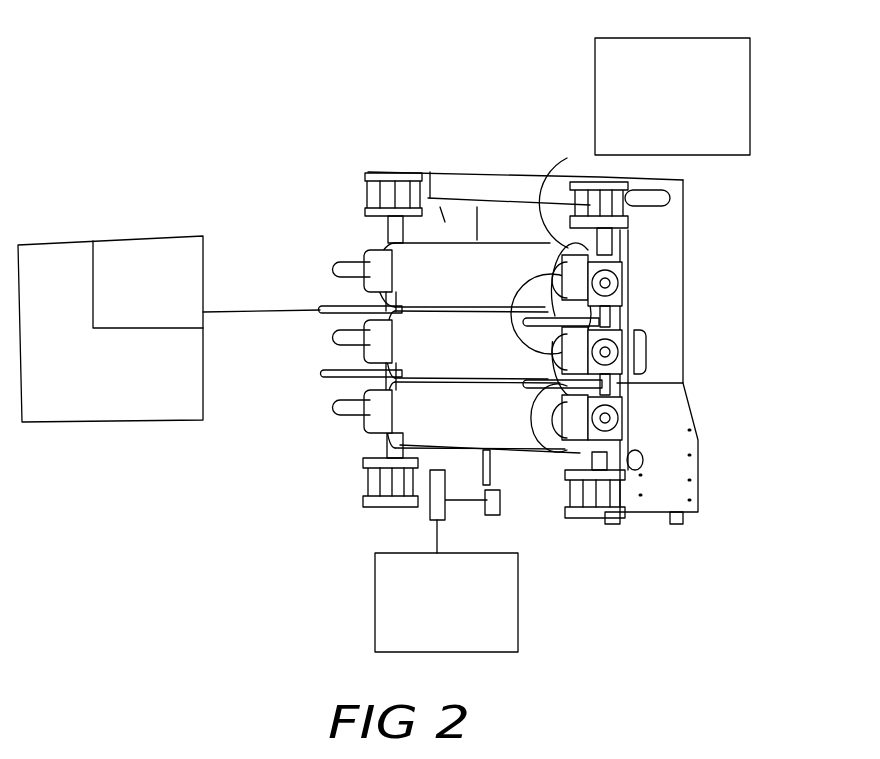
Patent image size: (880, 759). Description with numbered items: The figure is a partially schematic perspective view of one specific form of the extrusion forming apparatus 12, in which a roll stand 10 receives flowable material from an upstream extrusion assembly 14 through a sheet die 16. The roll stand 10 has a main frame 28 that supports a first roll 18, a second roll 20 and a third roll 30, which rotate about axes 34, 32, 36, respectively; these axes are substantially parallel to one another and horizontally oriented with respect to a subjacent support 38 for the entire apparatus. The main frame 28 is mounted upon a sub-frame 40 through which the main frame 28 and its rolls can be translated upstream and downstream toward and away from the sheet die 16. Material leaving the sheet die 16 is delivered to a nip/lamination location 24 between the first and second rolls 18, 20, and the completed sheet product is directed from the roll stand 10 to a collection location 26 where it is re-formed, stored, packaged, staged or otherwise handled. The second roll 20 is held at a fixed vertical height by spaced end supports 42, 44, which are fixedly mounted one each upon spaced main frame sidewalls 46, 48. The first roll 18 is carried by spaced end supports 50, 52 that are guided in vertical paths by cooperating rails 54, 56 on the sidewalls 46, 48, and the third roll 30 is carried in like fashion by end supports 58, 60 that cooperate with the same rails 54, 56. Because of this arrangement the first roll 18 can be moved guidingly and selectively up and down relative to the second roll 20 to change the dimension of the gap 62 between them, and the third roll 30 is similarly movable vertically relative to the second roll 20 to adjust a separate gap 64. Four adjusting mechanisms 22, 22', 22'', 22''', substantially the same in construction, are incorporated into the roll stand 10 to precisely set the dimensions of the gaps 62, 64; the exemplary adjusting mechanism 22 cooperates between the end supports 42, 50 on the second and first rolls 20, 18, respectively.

The roll stand 10 is at (520, 168).
The extrusion forming apparatus 12 is at (290, 112).
The extrusion assembly 14 is at (122, 410).
The sheet die 16 is at (152, 316).
The first roll 18 is at (504, 290).
The second roll 20 is at (531, 376).
The adjusting mechanism 22 is at (621, 240).
The adjusting mechanism 22' is at (628, 373).
The adjusting mechanism 22'' is at (337, 287).
The adjusting mechanism 22''' is at (331, 411).
The nip/lamination location 24 is at (460, 315).
The collection location 26 is at (680, 134).
The main frame 28 is at (657, 475).
The third roll 30 is at (494, 429).
The axis 32 is at (674, 356).
The axis 34 is at (656, 285).
The axis 36 is at (658, 412).
The subjacent support 38 is at (567, 568).
The sub-frame 40 is at (448, 620).
The end support 42 is at (622, 322).
The end support 44 is at (348, 336).
The main frame sidewall 46 is at (668, 445).
The main frame sidewall 48 is at (428, 172).
The end support 50 is at (607, 257).
The end support 52 is at (376, 258).
The rail 54 is at (560, 178).
The rail 56 is at (370, 170).
The end support 58 is at (560, 452).
The end support 60 is at (375, 418).
The gap 62 is at (483, 315).
The gap 64 is at (477, 382).